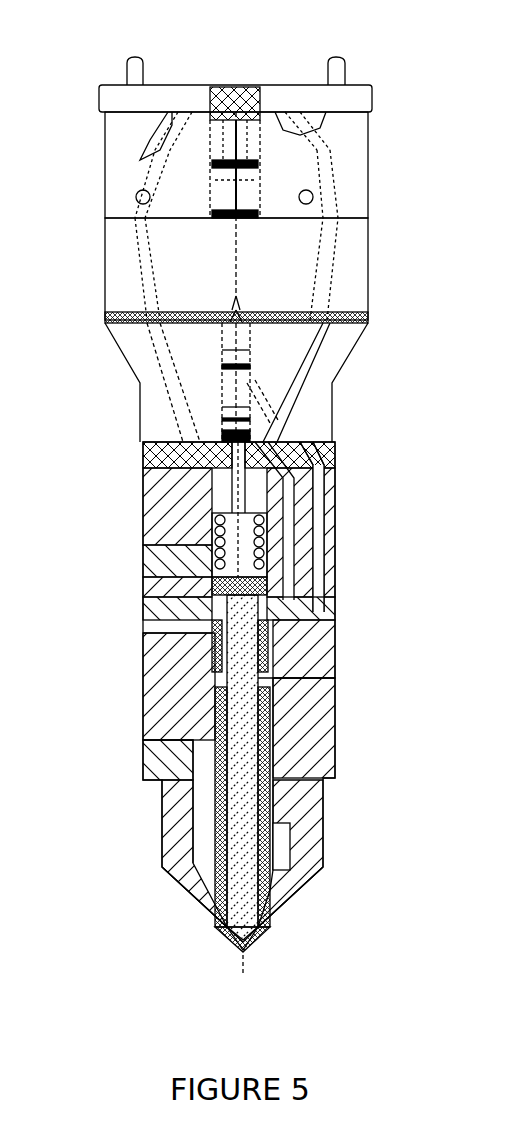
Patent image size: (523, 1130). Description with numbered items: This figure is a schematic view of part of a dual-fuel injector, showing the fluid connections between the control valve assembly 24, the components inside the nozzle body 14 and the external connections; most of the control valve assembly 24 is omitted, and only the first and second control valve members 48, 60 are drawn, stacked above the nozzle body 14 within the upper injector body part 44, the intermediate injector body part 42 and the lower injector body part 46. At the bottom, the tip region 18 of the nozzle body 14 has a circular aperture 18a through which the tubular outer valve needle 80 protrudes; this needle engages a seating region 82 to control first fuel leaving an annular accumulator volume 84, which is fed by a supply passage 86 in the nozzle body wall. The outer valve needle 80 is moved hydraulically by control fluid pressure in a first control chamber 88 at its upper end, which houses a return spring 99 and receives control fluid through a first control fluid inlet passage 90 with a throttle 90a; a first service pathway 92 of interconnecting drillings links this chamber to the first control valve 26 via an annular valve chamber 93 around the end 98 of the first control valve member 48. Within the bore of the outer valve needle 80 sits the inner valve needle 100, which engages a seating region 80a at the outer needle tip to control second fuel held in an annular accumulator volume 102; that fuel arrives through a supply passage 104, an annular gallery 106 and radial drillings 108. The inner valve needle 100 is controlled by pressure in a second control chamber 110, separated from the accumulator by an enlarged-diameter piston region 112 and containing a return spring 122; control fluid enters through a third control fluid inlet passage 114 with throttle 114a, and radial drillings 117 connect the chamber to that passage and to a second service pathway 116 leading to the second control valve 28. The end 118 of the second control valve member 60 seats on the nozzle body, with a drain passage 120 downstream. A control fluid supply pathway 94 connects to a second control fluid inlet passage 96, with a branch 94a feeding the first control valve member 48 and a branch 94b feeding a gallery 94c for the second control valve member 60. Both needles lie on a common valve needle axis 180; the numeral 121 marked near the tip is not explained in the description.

The nozzle body 14 is at (97, 668).
The tip region 18 is at (287, 890).
The circular aperture 18a is at (278, 905).
The control valve assembly 24 is at (54, 126).
The first control valve 26 is at (378, 141).
The second control valve 28 is at (102, 369).
The intermediate injector body part 42 is at (358, 272).
The upper injector body part 44 is at (370, 168).
The lower injector body part 46 is at (323, 413).
The first control valve member 48 is at (253, 97).
The second control valve member 60 is at (243, 340).
The outer valve needle 80 is at (280, 775).
The seating region 80a is at (240, 927).
The seating region 82 is at (207, 900).
The annular accumulator volume 84 is at (285, 850).
The supply passage 86 is at (143, 742).
The first control chamber 88 is at (320, 540).
The first control fluid inlet passage 90 is at (143, 545).
The restricted orifice or throttle 90a is at (143, 570).
The first service pathway 92 is at (140, 268).
The annular valve chamber 93 is at (205, 84).
The control fluid supply pathway 94 is at (340, 253).
The branch 94a is at (283, 97).
The branch 94b is at (257, 398).
The gallery 94c is at (240, 392).
The second control fluid inlet passage 96 is at (335, 617).
The end of the first control valve member 98 is at (209, 87).
The return spring 99 is at (300, 498).
The inner valve needle 100 is at (260, 720).
The annular accumulator volume 102 is at (300, 805).
The supply passage 104 is at (310, 680).
The annular gallery 106 is at (143, 705).
The radial drillings 108 is at (335, 655).
The second control chamber 110 is at (270, 585).
The enlarged-diameter piston region 112 is at (200, 655).
The third control fluid inlet passage 114 is at (210, 625).
The restricted orifice or throttle 114a is at (212, 600).
The second service pathway 116 is at (290, 478).
The radial drillings 117 is at (143, 628).
The end of the second control valve member 118 is at (228, 442).
The drain passage 120 is at (175, 470).
The injector axis 121 is at (245, 958).
The return spring 122 is at (300, 600).
The common valve needle axis 180 is at (250, 950).